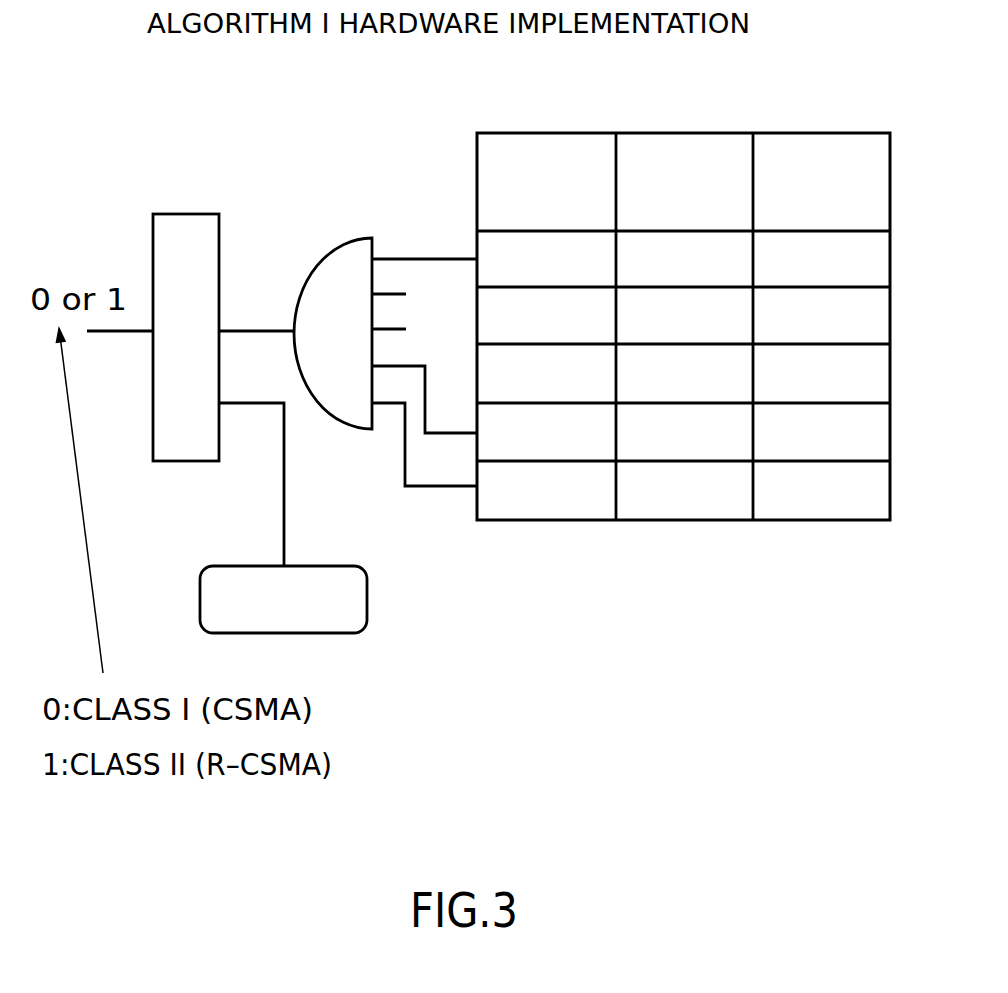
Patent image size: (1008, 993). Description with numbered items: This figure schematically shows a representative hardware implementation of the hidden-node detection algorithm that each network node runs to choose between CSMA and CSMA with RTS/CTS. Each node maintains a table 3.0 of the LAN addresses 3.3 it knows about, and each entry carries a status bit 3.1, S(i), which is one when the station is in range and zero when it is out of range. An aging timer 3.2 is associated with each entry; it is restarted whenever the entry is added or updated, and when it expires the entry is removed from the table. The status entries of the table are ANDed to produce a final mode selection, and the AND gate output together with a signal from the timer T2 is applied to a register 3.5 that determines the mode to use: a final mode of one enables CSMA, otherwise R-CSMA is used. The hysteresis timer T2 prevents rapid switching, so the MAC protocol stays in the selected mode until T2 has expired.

The table 3.0 is at (683, 345).
The status bit 3.1 is at (537, 555).
The aging timer 3.2 is at (808, 555).
The LAN addresses 3.3 is at (675, 555).
The register 3.5 is at (238, 237).
The hysteresis timer T2 is at (209, 554).